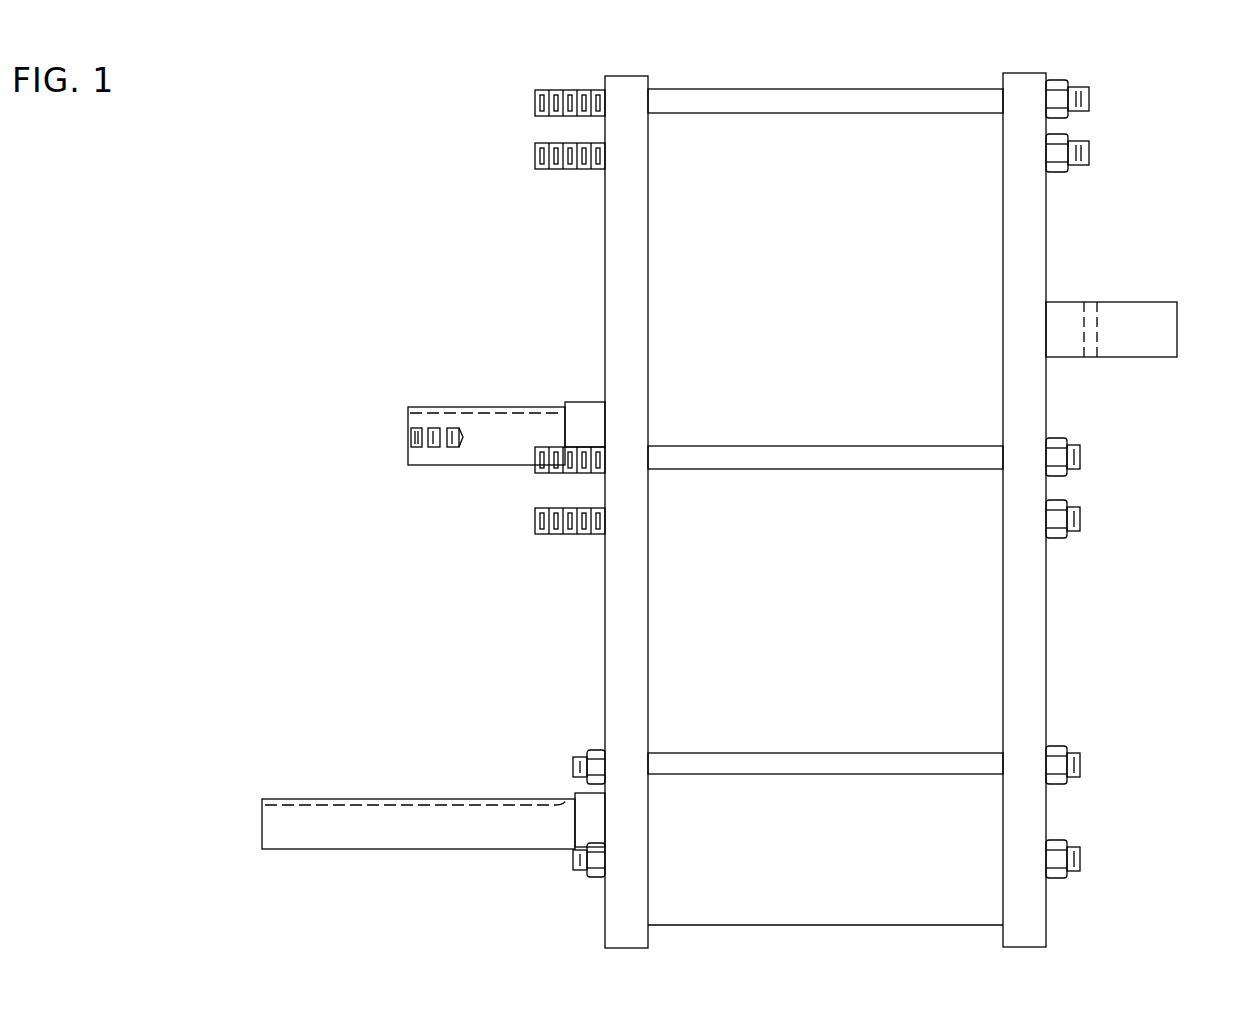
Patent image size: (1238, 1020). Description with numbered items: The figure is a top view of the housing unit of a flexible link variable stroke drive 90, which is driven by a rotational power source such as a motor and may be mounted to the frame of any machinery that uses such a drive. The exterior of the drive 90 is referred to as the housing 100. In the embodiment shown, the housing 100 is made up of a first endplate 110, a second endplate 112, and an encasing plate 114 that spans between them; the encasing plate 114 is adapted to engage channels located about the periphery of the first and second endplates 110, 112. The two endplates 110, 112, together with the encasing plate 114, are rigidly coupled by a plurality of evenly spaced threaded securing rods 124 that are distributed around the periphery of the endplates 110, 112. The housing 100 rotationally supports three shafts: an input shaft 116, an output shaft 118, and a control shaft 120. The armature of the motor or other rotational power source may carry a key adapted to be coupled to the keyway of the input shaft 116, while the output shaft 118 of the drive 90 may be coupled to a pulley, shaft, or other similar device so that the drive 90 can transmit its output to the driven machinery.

The flexible link variable stroke drive 90 is at (578, 242).
The housing 100 is at (968, 235).
The first endplate 110 is at (625, 323).
The second endplate 112 is at (1028, 408).
The encasing plate 114 is at (952, 632).
The input shaft 116 is at (515, 425).
The output shaft 118 is at (467, 820).
The control shaft 120 is at (1130, 317).
The threaded securing rods 124 is at (862, 102).